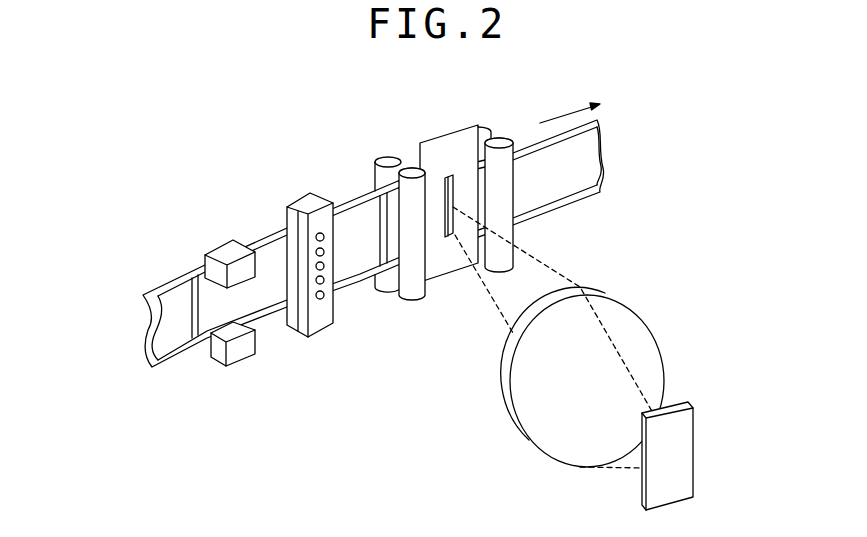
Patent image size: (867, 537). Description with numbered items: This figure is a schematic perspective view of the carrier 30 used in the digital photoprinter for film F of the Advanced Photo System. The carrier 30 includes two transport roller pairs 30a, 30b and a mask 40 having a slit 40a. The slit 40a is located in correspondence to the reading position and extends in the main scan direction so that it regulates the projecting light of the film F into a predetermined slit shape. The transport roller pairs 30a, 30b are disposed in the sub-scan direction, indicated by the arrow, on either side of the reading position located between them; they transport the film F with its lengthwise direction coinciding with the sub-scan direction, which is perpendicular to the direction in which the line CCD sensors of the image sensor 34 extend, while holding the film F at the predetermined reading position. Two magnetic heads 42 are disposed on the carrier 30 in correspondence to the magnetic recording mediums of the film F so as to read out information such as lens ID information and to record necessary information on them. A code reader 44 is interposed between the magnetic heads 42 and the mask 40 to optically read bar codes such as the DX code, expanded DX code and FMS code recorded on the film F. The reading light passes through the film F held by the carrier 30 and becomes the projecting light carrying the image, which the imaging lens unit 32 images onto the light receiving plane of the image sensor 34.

The film F is at (167, 290).
The carrier 30 is at (500, 223).
The transport roller pair 30a is at (413, 293).
The transport roller pair 30b is at (500, 208).
The imaging lens unit 32 is at (625, 325).
The image sensor 34 is at (678, 450).
The mask 40 is at (472, 204).
The slit 40a is at (449, 176).
The magnetic heads 42 is at (227, 253).
The code reader 44 is at (303, 204).